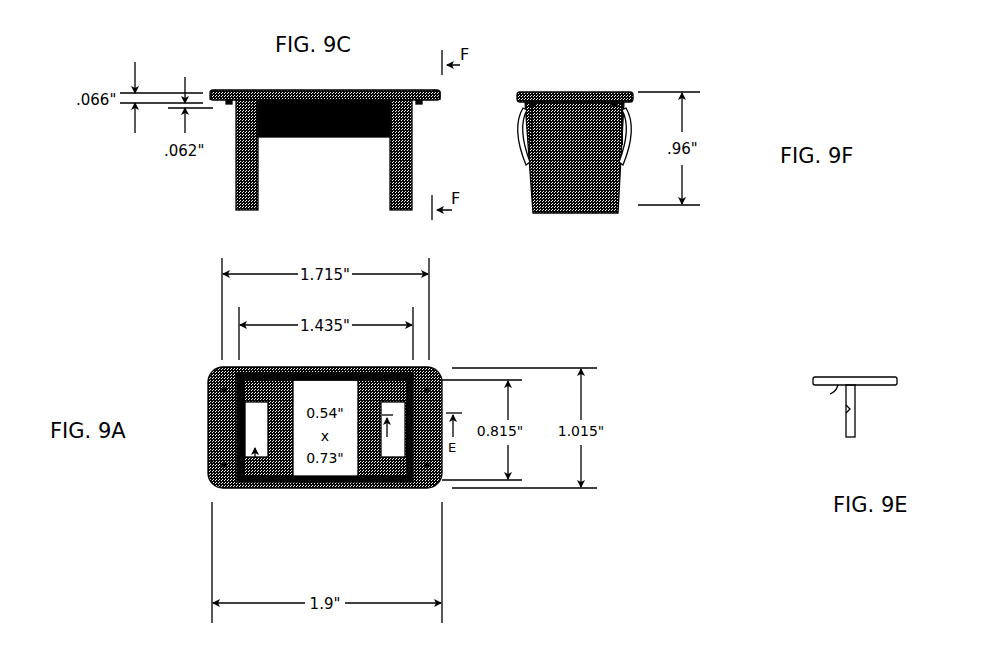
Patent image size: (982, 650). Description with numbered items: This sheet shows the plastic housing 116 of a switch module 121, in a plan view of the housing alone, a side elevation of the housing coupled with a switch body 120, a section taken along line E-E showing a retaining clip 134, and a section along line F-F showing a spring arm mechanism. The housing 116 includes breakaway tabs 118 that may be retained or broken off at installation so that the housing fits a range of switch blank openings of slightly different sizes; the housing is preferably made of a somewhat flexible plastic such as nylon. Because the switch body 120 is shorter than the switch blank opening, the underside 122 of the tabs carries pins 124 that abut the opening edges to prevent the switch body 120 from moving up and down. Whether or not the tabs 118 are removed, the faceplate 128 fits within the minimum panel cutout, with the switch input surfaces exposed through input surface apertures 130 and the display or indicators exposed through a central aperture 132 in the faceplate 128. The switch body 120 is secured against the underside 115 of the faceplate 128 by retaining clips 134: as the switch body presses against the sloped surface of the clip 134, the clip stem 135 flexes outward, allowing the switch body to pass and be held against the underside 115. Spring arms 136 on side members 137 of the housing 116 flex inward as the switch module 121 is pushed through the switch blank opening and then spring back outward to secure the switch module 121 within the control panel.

In FIG. 9E, the underside of the housing faceplate 115 is at (830, 386).
In FIG. 9F, the housing 116 is at (603, 214).
In FIG. 9A, the housing 116 is at (206, 486).
In FIG. 9C, the breakaway tabs 118 is at (212, 90).
In FIG. 9A, the breakaway tabs 118 is at (222, 390).
In FIG. 9C, the switch body 120 is at (352, 138).
In FIG. 9C, the switch module 121 is at (293, 128).
In FIG. 9F, the switch module 121 is at (590, 138).
In FIG. 9C, the underside of the tabs 122 is at (435, 102).
In FIG. 9C, the pins 124 is at (421, 104).
In FIG. 9A, the pins 124 is at (222, 463).
In FIG. 9C, the faceplate 128 is at (362, 92).
In FIG. 9F, the faceplate 128 is at (528, 92).
In FIG. 9A, the faceplate 128 is at (423, 388).
In FIG. 9E, the faceplate 128 is at (885, 380).
In FIG. 9A, the input surface apertures 130 is at (255, 456).
In FIG. 9A, the central aperture 132 is at (311, 478).
In FIG. 9E, the retaining clip 134 is at (844, 412).
In FIG. 9E, the clip stem 135 is at (855, 399).
In FIG. 9F, the spring arms 136 is at (522, 152).
In FIG. 9C, the side members 137 is at (250, 165).
In FIG. 9F, the side members 137 is at (597, 145).